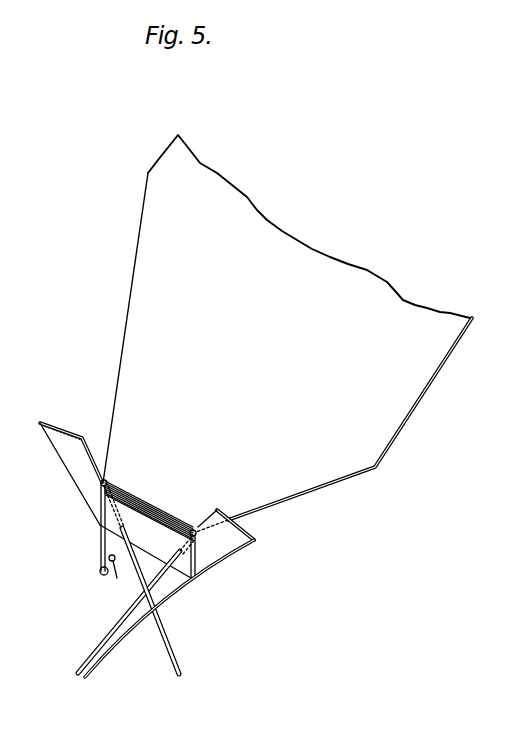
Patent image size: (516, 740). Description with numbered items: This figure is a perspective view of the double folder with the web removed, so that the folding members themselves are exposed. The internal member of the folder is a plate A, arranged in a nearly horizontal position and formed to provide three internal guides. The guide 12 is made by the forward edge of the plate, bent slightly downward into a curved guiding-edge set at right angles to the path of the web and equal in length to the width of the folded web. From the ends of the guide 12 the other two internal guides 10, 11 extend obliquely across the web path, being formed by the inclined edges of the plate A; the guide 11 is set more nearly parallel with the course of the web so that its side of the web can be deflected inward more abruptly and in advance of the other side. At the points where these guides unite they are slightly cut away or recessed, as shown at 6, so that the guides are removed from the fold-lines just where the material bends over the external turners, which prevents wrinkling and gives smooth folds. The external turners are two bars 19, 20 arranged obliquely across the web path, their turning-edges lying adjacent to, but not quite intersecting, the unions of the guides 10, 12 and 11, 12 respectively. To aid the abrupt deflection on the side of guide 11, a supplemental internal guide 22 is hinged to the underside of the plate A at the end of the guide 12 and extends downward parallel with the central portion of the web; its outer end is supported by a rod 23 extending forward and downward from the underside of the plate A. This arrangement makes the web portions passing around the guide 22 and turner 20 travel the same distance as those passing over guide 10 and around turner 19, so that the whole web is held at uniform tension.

The plate A is at (309, 250).
The recess at points of union 6 is at (108, 483).
The internal guide 10 is at (287, 498).
The internal guide 11 is at (115, 400).
The internal guide 12 is at (187, 514).
The external turner 19 is at (218, 557).
The external turner 20 is at (77, 473).
The supplemental internal guide 22 is at (101, 545).
The rod 23 is at (118, 575).